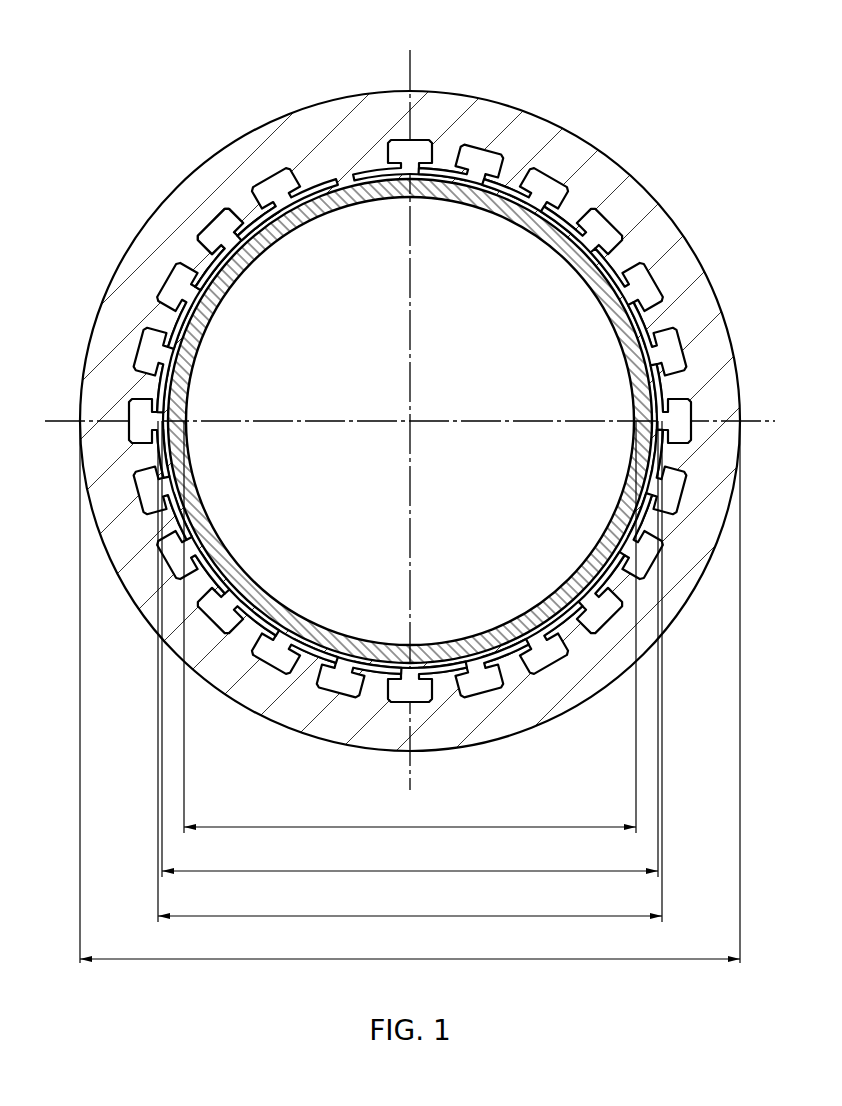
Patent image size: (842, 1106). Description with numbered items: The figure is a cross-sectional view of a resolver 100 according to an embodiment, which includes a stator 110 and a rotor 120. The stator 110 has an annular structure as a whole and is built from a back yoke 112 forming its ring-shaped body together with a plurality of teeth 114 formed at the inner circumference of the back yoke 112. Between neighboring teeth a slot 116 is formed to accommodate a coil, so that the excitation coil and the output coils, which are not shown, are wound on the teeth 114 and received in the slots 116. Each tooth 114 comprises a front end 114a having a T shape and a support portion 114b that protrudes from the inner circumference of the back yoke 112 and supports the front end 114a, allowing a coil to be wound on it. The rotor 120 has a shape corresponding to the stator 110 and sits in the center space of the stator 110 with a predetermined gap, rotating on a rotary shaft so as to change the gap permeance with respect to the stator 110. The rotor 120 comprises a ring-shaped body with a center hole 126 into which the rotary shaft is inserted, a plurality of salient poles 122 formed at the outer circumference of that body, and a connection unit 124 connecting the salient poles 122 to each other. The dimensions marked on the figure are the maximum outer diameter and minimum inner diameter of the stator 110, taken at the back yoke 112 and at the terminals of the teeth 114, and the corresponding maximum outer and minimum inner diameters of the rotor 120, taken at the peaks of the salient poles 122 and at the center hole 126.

The resolver 100 is at (141, 28).
The stator 110 is at (421, 408).
The back yoke 112 is at (225, 165).
The teeth 114 is at (250, 213).
The front end 114a is at (233, 233).
The support portion 114b is at (243, 238).
The slot 116 is at (177, 278).
The rotor 120 is at (411, 187).
The salient poles 122 is at (503, 197).
The connection unit 124 is at (552, 227).
The center hole 126 is at (578, 303).